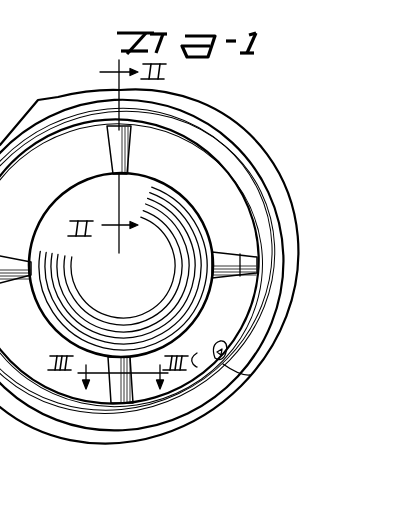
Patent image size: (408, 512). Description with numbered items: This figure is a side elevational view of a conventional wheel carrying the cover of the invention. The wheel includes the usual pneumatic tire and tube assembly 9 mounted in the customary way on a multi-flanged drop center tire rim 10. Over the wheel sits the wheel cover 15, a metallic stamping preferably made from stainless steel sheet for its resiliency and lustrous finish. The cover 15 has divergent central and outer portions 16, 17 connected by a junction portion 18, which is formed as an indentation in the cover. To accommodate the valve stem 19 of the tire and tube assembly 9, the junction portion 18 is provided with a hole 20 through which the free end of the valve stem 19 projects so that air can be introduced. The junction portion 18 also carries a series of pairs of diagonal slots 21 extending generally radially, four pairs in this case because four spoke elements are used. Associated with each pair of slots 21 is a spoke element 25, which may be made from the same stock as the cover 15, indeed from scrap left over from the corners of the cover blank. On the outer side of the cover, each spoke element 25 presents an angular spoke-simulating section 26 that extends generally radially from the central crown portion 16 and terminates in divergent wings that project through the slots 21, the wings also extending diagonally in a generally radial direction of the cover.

The pneumatic tire and tube assembly 9 is at (207, 110).
The multi-flanged drop center tire rim 10 is at (227, 137).
The wheel cover 15 is at (53, 229).
The central portion 16 is at (121, 256).
The outer portion 17 is at (242, 163).
The junction portion 18 is at (197, 367).
The valve stem 19 is at (226, 340).
The hole 20 is at (223, 364).
The diagonal slots 21 is at (134, 450).
The spoke element 25 is at (260, 239).
The angular spoke-simulating section 26 is at (231, 249).